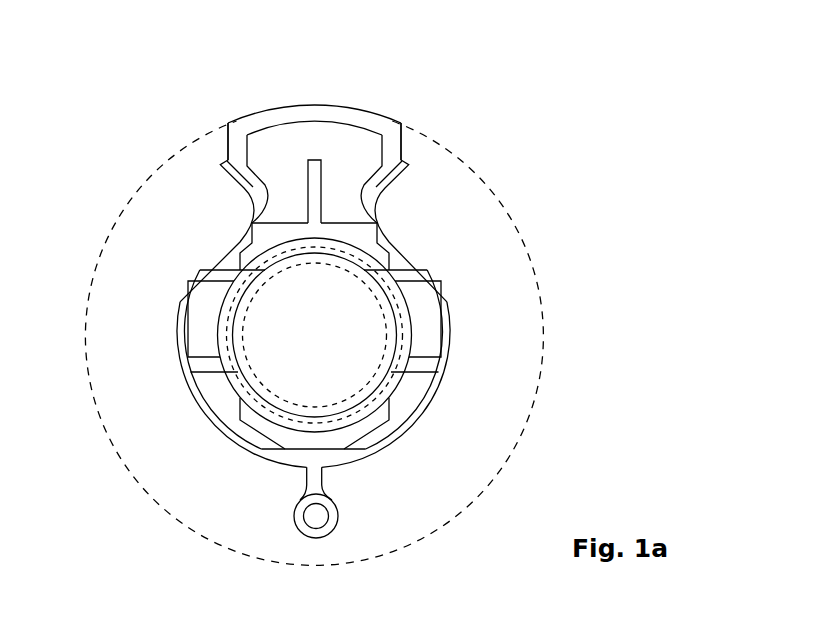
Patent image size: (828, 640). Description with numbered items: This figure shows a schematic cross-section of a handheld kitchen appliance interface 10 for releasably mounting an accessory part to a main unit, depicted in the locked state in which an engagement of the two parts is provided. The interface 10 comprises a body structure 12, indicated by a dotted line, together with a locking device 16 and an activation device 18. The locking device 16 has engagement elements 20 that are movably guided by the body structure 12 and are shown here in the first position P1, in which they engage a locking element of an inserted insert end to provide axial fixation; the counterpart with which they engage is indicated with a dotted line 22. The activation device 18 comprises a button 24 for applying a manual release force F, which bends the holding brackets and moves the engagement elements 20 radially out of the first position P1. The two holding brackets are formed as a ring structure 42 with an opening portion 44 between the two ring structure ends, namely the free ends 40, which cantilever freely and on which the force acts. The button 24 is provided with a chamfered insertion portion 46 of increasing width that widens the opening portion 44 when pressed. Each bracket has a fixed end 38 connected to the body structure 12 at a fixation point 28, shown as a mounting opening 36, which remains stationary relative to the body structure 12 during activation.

The handheld kitchen appliance interface 10 is at (388, 88).
The body structure 12 is at (487, 183).
The locking device 16 is at (450, 270).
The activation device 18 is at (307, 93).
The engagement element 20 is at (190, 333).
The dotted line 22 is at (290, 406).
The button 24 is at (339, 104).
The fixation point 28 is at (328, 536).
The mounting opening 36 is at (310, 515).
The fixed end 38 is at (303, 478).
The free end 40 is at (235, 191).
The ring structure 42 is at (198, 234).
The opening portion 44 is at (266, 200).
The chamfered insertion portion 46 is at (236, 191).
The manual release force F is at (322, 98).
The first position P1 is at (413, 388).